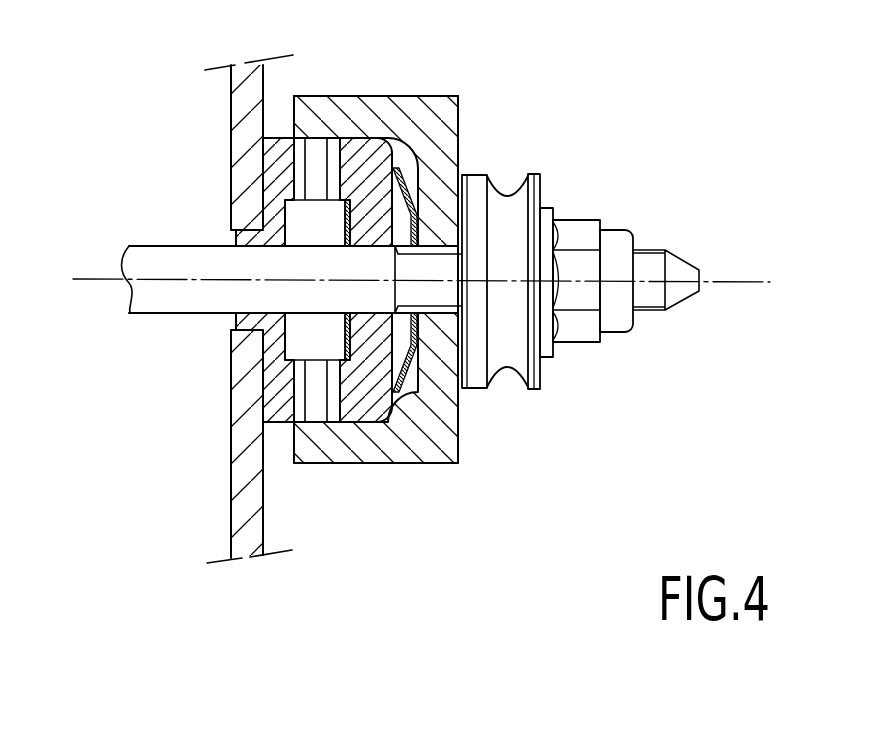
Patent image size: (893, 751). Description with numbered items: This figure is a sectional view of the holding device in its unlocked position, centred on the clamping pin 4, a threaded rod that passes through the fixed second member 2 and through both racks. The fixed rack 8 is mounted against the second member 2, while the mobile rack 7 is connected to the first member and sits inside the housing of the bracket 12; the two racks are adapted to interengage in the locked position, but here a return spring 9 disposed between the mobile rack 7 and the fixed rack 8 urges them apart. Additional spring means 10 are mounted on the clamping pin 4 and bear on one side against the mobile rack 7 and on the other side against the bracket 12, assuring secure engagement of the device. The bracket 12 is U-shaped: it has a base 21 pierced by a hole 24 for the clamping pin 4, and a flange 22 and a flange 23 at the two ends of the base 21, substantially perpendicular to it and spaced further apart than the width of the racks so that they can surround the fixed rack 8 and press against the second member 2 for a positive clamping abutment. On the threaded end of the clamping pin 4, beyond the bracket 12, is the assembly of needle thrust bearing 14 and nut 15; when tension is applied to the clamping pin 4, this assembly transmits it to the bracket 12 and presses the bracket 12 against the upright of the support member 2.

The second member 2 is at (231, 127).
The clamping pin 4 is at (190, 263).
The mobile rack 7 is at (367, 397).
The fixed rack 8 is at (280, 395).
The return spring 9 is at (307, 340).
The additional spring means 10 is at (407, 380).
The bracket 12 is at (433, 86).
The needle thrust bearing 14 is at (512, 350).
The nut 15 is at (617, 320).
The base 21 is at (440, 168).
The flange 22 is at (352, 110).
The flange 23 is at (333, 443).
The hole 24 is at (457, 221).